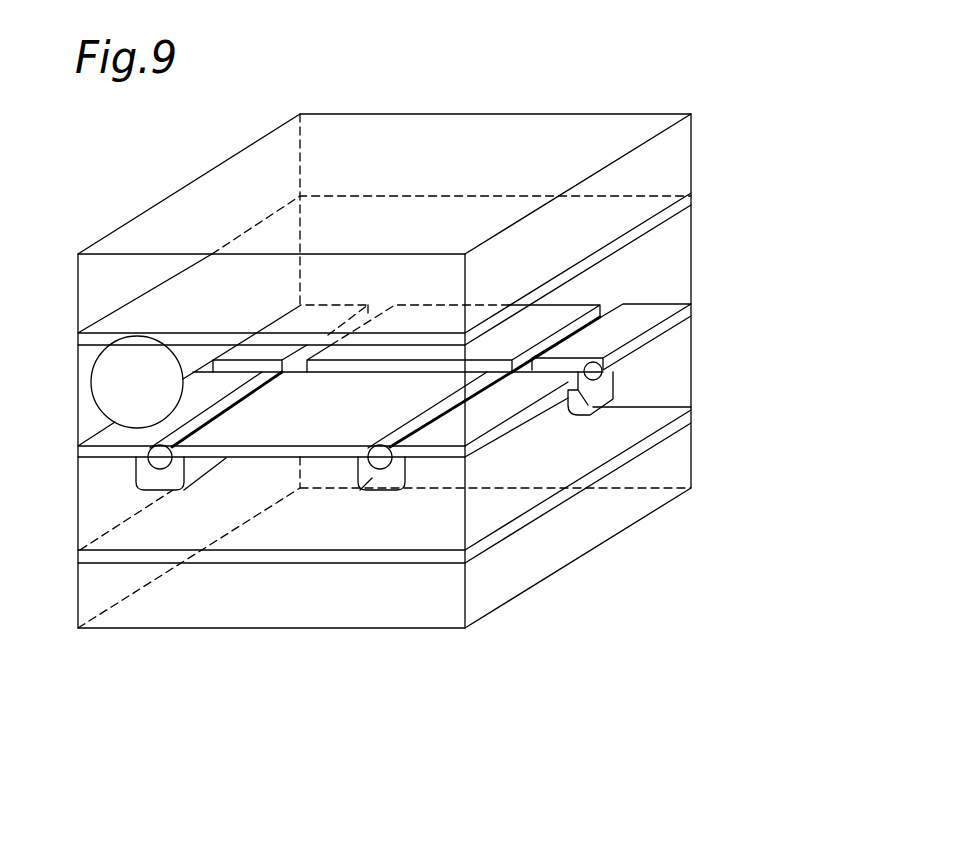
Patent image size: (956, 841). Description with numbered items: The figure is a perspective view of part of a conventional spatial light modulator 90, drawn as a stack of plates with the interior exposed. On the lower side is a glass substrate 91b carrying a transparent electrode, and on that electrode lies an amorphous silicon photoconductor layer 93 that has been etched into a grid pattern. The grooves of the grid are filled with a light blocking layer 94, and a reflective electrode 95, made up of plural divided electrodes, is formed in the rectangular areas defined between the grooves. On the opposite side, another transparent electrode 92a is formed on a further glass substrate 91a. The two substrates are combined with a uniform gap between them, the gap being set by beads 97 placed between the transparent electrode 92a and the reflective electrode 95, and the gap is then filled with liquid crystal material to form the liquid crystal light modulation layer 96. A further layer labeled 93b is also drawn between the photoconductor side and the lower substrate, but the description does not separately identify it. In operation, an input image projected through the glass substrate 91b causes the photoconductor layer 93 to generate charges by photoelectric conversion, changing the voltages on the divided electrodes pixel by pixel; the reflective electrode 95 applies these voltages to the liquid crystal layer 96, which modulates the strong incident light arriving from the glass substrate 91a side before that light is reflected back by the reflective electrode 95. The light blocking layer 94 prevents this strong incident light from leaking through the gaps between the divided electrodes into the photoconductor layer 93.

The spatial light modulator 90 is at (483, 628).
The glass substrate 91a is at (692, 157).
The transparent electrode 92a is at (692, 202).
The liquid crystal light modulation layer 96 is at (692, 247).
The reflective electrode 95 is at (692, 310).
The amorphous silicon photoconductor layer 93 is at (692, 375).
The lower layer 93b is at (692, 417).
The glass substrate 91b is at (692, 458).
The beads 97 is at (103, 393).
The light blocking layer 94 is at (370, 478).